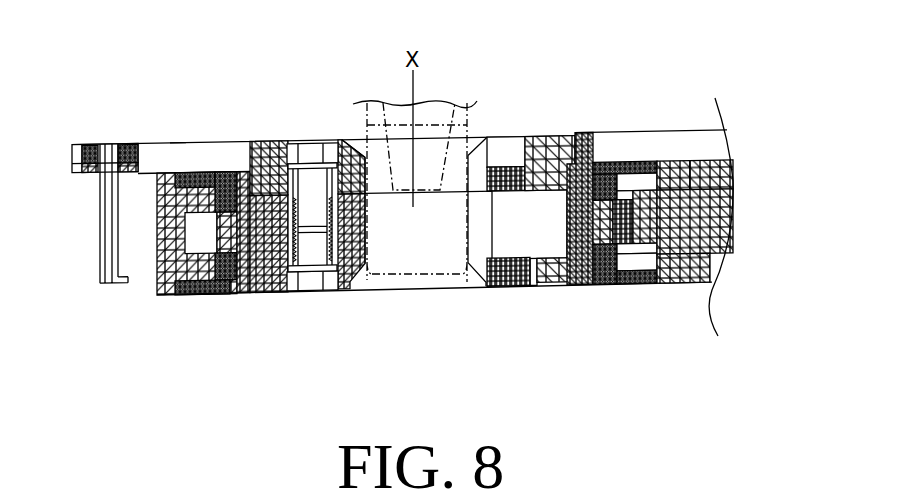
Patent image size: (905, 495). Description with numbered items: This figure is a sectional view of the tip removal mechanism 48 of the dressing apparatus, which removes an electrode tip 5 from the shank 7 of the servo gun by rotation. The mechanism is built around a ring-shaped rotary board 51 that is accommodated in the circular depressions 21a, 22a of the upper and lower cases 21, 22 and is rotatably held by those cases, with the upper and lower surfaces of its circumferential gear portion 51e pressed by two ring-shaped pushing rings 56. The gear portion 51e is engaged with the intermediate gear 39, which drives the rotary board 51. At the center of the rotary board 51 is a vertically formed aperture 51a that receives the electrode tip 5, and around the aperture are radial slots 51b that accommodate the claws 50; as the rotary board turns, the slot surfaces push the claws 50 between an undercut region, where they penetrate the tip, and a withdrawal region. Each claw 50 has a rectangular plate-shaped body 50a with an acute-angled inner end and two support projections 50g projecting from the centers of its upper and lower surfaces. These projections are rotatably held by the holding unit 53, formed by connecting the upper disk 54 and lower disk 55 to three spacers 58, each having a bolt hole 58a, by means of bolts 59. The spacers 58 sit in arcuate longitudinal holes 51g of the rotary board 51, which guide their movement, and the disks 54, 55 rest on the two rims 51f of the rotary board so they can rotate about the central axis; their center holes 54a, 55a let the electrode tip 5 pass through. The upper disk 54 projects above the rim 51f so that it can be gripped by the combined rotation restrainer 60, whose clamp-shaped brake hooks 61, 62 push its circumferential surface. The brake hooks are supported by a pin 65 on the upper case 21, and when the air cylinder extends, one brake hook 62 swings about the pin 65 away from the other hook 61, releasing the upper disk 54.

The electrode tip 5 is at (452, 108).
The shank 7 is at (437, 108).
The upper case 21 is at (167, 145).
The circular depression 21a is at (178, 145).
The lower case 22 is at (160, 266).
The circular depression 22a is at (190, 246).
The intermediate gear 39 is at (685, 165).
The tip removal mechanism 48 is at (283, 345).
The claw 50 is at (458, 220).
The body 50a is at (518, 238).
The support projection 50g is at (508, 135).
The rotary board 51 is at (283, 190).
The aperture 51a is at (372, 226).
The radial slot 51b is at (580, 238).
The gear portion 51e is at (213, 252).
The rim 51f is at (262, 160).
The arcuate longitudinal hole 51g is at (345, 168).
The holding unit 53 is at (571, 220).
The upper disk 54 is at (558, 130).
The center hole 54a is at (370, 103).
The lower disk 55 is at (561, 266).
The center hole 55a is at (373, 264).
The pushing ring 56 is at (236, 173).
The spacer 58 is at (331, 232).
The bolt hole 58a is at (311, 278).
The bolt 59 is at (302, 148).
The combined rotation restrainer 60 is at (95, 183).
The brake hook 61 is at (88, 143).
The brake hook 62 is at (68, 165).
The pin 65 is at (107, 205).